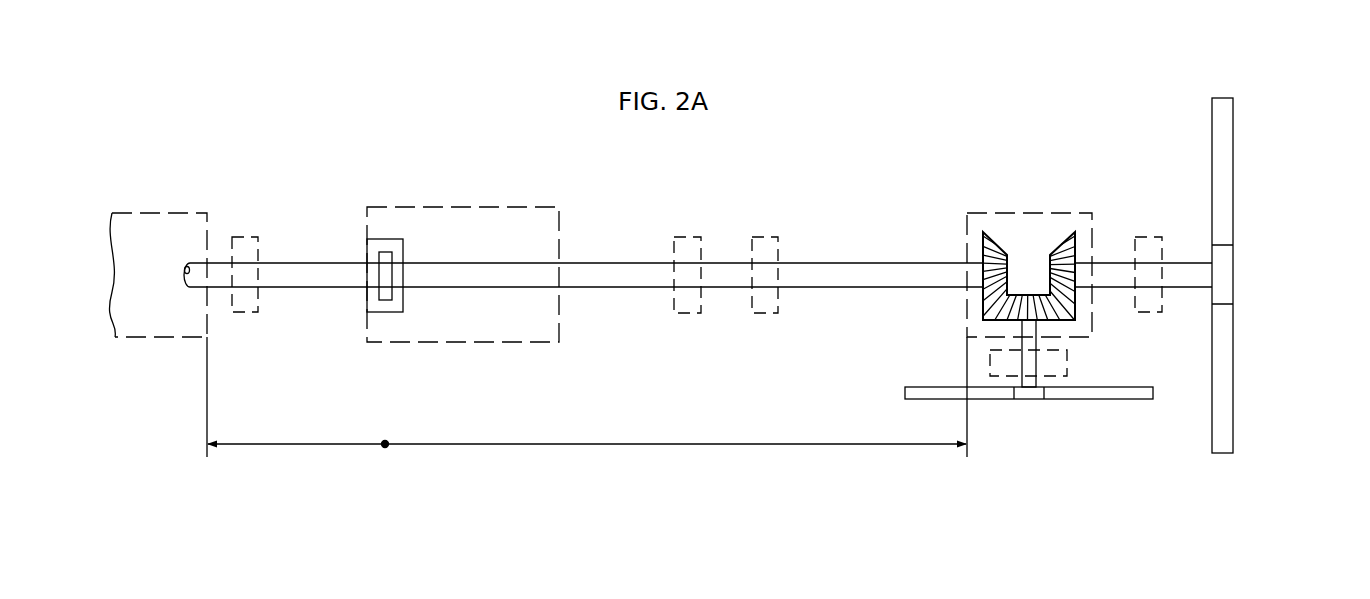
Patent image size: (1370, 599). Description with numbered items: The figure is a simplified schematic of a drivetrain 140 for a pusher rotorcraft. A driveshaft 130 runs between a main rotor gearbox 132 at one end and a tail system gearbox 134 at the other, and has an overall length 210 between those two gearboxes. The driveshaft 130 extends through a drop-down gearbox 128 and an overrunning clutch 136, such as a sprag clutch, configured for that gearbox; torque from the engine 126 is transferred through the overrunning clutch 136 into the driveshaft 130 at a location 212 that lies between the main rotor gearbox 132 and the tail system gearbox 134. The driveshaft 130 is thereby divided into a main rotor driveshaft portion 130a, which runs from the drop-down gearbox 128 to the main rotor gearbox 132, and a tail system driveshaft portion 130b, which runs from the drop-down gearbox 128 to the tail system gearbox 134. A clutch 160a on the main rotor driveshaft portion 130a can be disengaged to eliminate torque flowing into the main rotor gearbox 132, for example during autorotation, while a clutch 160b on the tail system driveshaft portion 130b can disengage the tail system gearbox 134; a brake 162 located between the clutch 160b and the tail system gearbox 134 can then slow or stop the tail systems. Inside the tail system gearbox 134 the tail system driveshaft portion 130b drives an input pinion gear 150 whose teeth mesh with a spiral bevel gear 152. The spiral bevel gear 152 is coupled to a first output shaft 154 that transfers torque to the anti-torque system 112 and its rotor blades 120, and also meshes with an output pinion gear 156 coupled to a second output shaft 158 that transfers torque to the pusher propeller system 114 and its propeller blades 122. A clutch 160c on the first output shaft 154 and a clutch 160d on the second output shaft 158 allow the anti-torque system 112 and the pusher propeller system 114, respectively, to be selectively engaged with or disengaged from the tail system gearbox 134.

The anti-torque system 112 is at (1056, 429).
The pusher propeller system 114 is at (1264, 204).
The rotor blades 120 is at (1127, 400).
The propeller blades 122 is at (1235, 143).
The engine 126 is at (480, 239).
The drop-down gearbox 128 is at (431, 276).
The driveshaft 130 is at (698, 284).
The main rotor driveshaft portion 130a is at (298, 290).
The tail system driveshaft portion 130b is at (835, 288).
The main rotor gearbox 132 is at (127, 212).
The tail system gearbox 134 is at (964, 304).
The overrunning clutch 136 is at (386, 293).
The drivetrain 140 is at (611, 214).
The input pinion gear 150 is at (1042, 263).
The spiral bevel gear 152 is at (1028, 293).
The first output shaft 154 is at (1037, 327).
The output pinion gear 156 is at (1057, 253).
The second output shaft 158 is at (1187, 262).
The clutch 160a is at (253, 237).
The clutch 160b is at (692, 314).
The clutch 160c is at (1067, 353).
The clutch 160d is at (1140, 237).
The brake 162 is at (770, 237).
The overall length 210 is at (587, 445).
The location 212 is at (385, 450).